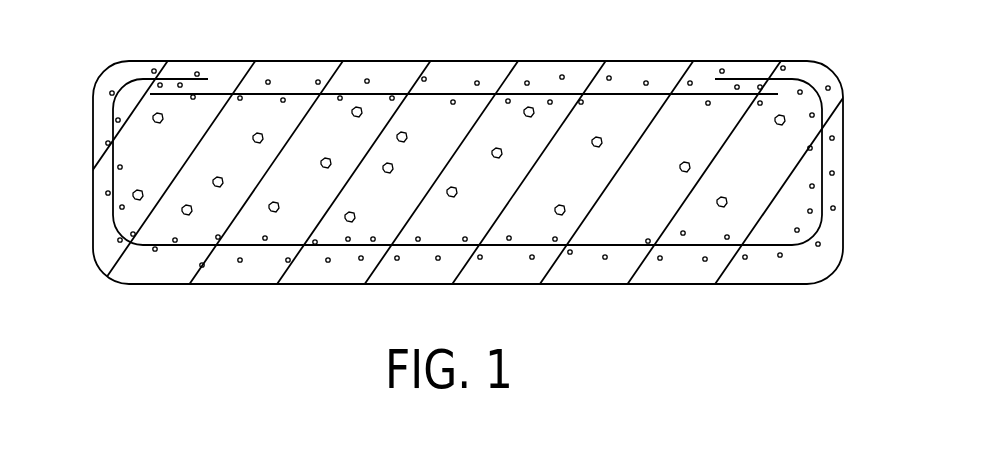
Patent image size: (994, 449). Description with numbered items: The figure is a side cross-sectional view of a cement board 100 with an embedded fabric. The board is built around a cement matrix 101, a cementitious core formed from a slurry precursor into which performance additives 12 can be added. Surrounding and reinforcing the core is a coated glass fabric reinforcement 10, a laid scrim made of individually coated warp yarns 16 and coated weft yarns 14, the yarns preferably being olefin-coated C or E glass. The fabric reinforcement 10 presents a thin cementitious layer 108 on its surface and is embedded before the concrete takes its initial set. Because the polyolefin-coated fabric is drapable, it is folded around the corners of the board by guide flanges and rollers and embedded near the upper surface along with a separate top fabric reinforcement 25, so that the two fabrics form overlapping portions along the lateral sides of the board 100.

The coated glass fabric reinforcement 10 is at (800, 78).
The coated weft yarns 14 is at (838, 82).
The coated warp yarns 16 is at (823, 197).
The performance additives 12 is at (723, 202).
The top fabric reinforcement 25 is at (617, 93).
The thin cementitious layer 108 is at (447, 77).
The cement matrix 101 is at (153, 162).
The cement board 100 is at (776, 342).